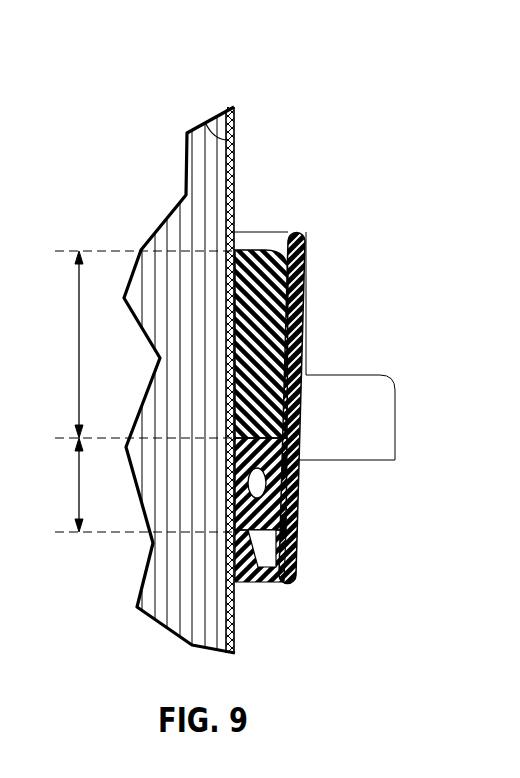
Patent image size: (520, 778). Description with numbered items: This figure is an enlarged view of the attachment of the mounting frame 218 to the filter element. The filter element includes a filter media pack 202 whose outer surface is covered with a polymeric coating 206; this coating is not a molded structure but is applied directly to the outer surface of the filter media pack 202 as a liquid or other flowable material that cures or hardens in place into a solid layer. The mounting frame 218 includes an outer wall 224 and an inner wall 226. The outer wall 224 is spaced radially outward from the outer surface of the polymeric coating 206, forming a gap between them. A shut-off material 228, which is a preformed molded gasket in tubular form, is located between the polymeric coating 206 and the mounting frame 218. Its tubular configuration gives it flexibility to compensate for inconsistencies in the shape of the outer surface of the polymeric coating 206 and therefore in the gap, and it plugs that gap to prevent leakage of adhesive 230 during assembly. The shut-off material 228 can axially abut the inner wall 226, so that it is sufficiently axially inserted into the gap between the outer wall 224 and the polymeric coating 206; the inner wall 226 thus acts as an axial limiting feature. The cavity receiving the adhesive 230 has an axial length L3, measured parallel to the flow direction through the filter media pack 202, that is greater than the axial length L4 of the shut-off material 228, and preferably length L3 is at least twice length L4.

The filter media pack 202 is at (195, 138).
The polymeric coating 206 is at (236, 170).
The mounting frame 218 is at (380, 412).
The outer wall 224 is at (295, 323).
The inner wall 226 is at (207, 128).
The shut-off material 228 is at (270, 498).
The adhesive 230 is at (273, 290).
The axial length of the cavity L3 is at (79, 300).
The axial length of the shut-off material L4 is at (79, 468).